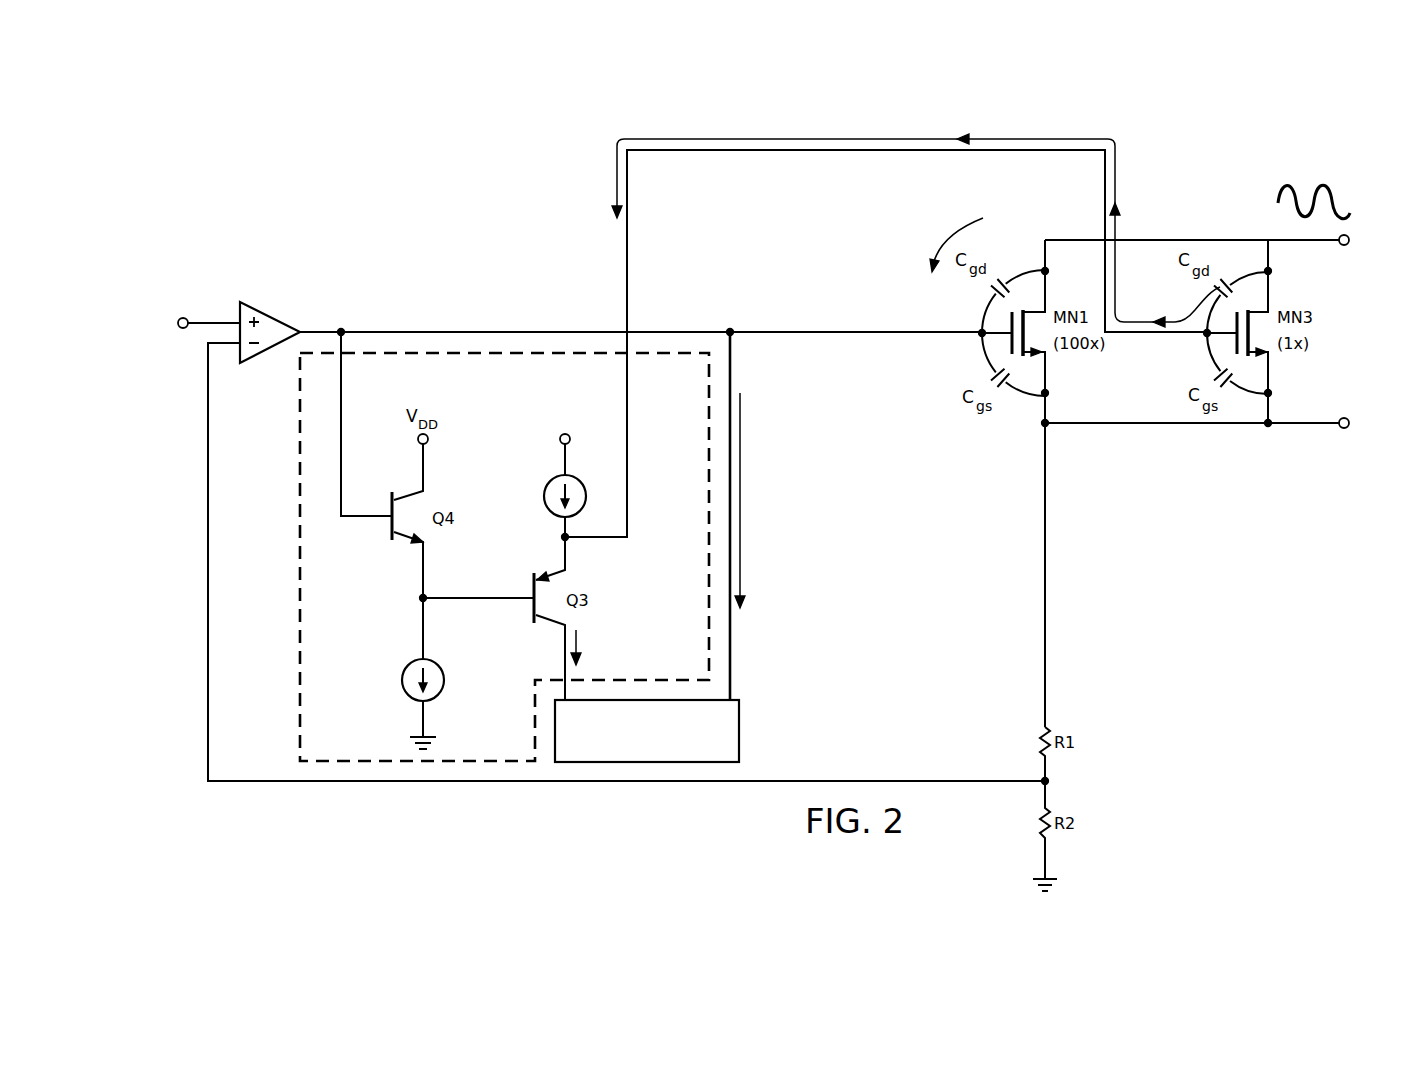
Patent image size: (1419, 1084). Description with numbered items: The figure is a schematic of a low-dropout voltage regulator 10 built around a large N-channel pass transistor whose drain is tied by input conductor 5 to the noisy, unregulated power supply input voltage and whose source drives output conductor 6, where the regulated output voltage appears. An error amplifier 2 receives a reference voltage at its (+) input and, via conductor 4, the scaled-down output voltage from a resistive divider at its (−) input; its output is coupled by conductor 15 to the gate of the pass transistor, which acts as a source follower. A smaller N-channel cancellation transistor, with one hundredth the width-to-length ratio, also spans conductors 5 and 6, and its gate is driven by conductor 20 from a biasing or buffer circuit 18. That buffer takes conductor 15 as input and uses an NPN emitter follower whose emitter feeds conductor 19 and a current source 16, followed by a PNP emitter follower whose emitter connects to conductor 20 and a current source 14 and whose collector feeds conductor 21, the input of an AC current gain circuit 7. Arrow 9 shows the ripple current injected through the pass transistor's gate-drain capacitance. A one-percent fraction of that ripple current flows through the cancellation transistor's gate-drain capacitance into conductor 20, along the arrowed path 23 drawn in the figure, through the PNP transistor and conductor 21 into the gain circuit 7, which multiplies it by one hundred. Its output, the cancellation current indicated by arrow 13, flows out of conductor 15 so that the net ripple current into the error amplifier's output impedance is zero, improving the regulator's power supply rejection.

The error amplifier 2 is at (272, 313).
The conductor 4 is at (555, 783).
The input conductor 5 is at (1305, 240).
The output conductor 6 is at (1305, 423).
The AC current gain circuit 7 is at (739, 731).
The arrow 9 is at (950, 237).
The low-dropout voltage regulator 10 is at (422, 205).
The arrow 13 is at (742, 425).
The current source 14 is at (545, 494).
The conductor 15 is at (483, 332).
The current source 16 is at (402, 680).
The biasing or buffer circuit 18 is at (290, 689).
The conductor 19 is at (415, 606).
The conductor 20 is at (609, 538).
The conductor 21 is at (563, 650).
The ripple current fraction conductor 23 is at (1118, 168).